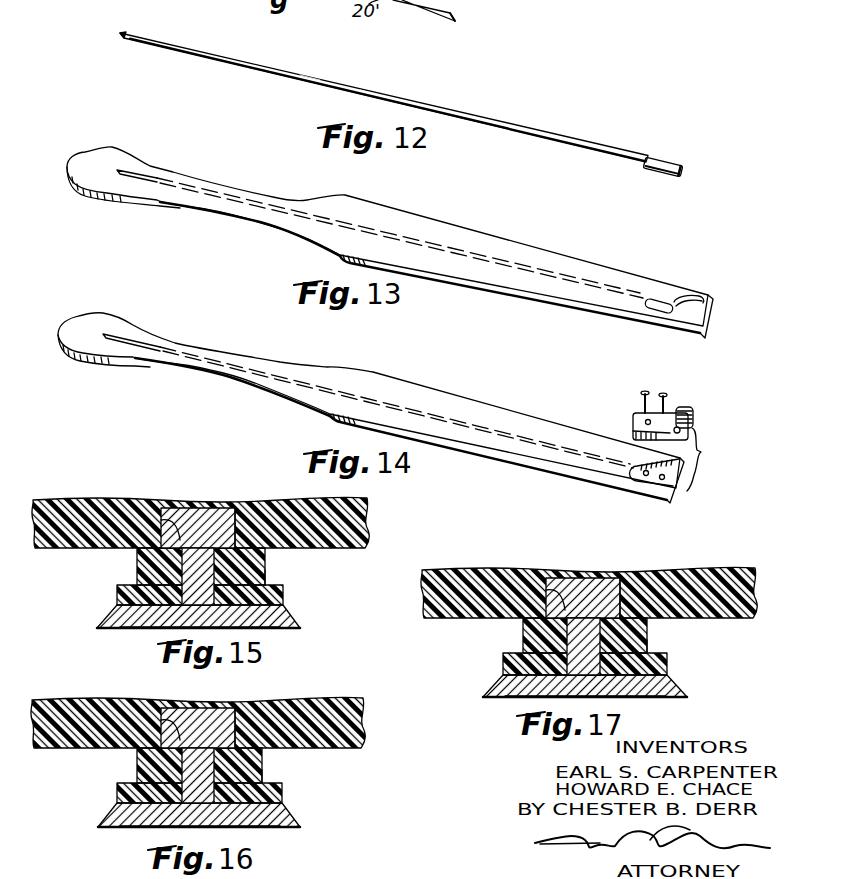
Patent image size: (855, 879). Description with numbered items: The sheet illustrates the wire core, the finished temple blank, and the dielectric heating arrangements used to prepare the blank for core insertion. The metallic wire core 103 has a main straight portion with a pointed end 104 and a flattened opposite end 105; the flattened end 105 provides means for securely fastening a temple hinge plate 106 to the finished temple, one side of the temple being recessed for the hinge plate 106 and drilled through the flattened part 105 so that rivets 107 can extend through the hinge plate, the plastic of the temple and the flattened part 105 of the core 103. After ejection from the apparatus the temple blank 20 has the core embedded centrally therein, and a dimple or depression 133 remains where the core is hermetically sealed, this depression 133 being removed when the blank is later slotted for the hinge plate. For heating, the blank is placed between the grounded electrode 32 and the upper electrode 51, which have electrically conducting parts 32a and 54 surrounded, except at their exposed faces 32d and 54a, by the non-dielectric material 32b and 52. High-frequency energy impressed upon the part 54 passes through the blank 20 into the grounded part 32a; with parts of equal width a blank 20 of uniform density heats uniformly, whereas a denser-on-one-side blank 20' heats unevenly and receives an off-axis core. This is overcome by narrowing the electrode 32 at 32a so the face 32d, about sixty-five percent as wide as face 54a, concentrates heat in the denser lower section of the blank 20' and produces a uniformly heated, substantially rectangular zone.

In FIG. 13, the temple blank 20 is at (390, 242).
In FIG. 14, the temple blank 20 is at (379, 408).
In FIG. 15, the temple blank 20 is at (167, 566).
In FIG. 16, the temple blank 20' is at (227, 765).
In FIG. 17, the temple blank 20' is at (611, 635).
In FIG. 12, the metallic wire core 103 is at (425, 106).
In FIG. 13, the metallic wire core 103 is at (403, 237).
In FIG. 14, the metallic wire core 103 is at (410, 405).
In FIG. 15, the metallic wire core 103 is at (163, 522).
In FIG. 16, the metallic wire core 103 is at (150, 707).
In FIG. 17, the metallic wire core 103 is at (550, 592).
In FIG. 12, the pointed end 104 is at (122, 32).
In FIG. 12, the flattened end 105 is at (664, 163).
In FIG. 13, the flattened end 105 is at (658, 296).
In FIG. 14, the temple hinge plate 106 is at (631, 414).
In FIG. 14, the rivets 107 is at (647, 393).
In FIG. 13, the depression 133 is at (700, 298).
In FIG. 15, the upper electrode 51 is at (358, 520).
In FIG. 16, the upper electrode 51 is at (328, 706).
In FIG. 17, the upper electrode 51 is at (711, 574).
In FIG. 15, the non-dielectric material 52 is at (80, 508).
In FIG. 15, the electrically conducting part 54 is at (200, 532).
In FIG. 16, the electrically conducting part 54 is at (207, 733).
In FIG. 17, the electrically conducting part 54 is at (592, 597).
In FIG. 15, the exposed face 54a is at (233, 545).
In FIG. 16, the exposed face 54a is at (267, 705).
In FIG. 17, the exposed face 54a is at (637, 620).
In FIG. 15, the grounded electrode 32 is at (123, 620).
In FIG. 16, the grounded electrode 32 is at (105, 815).
In FIG. 17, the grounded electrode 32 is at (504, 684).
In FIG. 15, the electrically conducting part 32a is at (170, 612).
In FIG. 16, the electrically conducting part 32a is at (133, 828).
In FIG. 17, the electrically conducting part 32a is at (550, 697).
In FIG. 15, the non-dielectric material 32b is at (117, 594).
In FIG. 16, the non-dielectric material 32b is at (117, 794).
In FIG. 17, the non-dielectric material 32b is at (669, 666).
In FIG. 15, the exposed face 32d is at (266, 578).
In FIG. 16, the exposed face 32d is at (220, 797).
In FIG. 17, the exposed face 32d is at (602, 655).